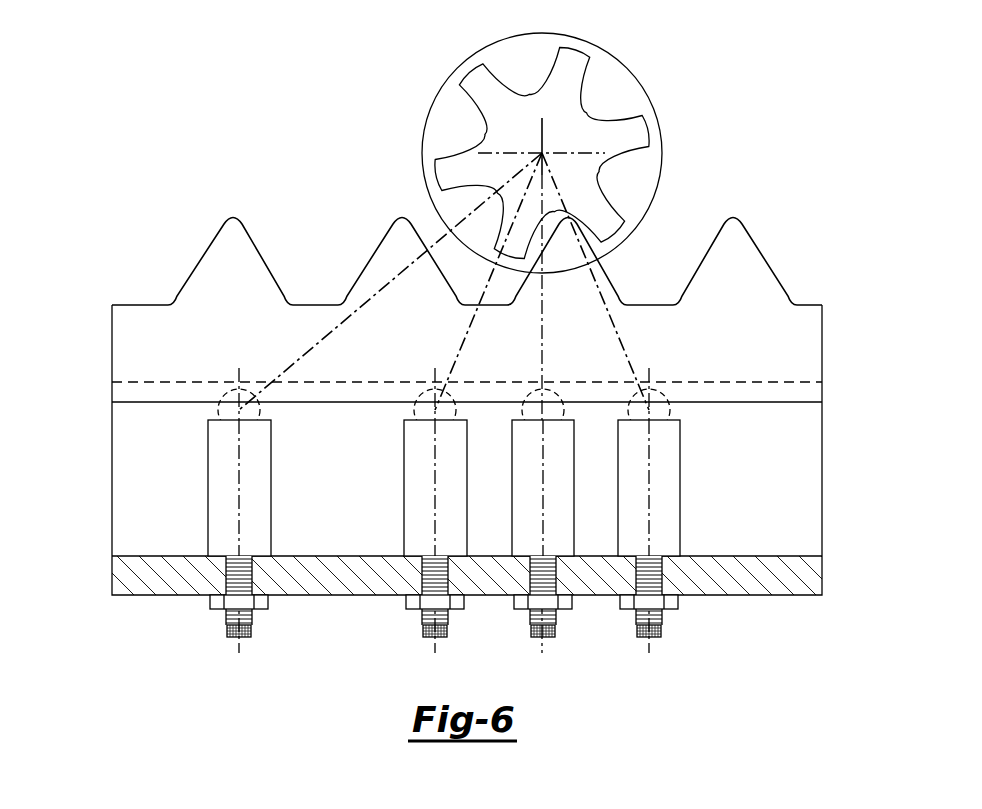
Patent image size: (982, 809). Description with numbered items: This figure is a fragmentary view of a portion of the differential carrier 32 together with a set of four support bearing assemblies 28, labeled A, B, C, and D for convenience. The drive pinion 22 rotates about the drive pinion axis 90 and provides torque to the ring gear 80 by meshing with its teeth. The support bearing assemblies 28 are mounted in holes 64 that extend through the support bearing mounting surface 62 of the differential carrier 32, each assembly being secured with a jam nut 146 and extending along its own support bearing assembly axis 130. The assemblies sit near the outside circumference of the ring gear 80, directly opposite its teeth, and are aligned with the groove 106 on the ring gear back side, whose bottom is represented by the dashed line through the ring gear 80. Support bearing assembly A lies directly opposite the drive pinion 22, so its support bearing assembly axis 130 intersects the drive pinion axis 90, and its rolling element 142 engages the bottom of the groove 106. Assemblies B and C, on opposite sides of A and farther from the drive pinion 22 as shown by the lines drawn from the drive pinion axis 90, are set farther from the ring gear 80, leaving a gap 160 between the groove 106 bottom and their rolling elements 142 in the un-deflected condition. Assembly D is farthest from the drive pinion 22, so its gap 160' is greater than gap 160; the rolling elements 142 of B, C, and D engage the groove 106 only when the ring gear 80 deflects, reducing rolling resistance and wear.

The drive pinion 22 is at (653, 100).
The drive pinion axis 90 is at (542, 153).
The ring gear 80 is at (383, 230).
The gap 160' is at (345, 281).
The gap 160 is at (508, 403).
The groove 106 is at (752, 382).
The rolling element 142 is at (416, 408).
The support bearing assembly 28 is at (271, 480).
The hole 64 is at (252, 565).
The jam nut 146 is at (268, 600).
The support bearing assembly axis 130 is at (240, 645).
The differential carrier 32 is at (471, 481).
The support bearing mounting surface 62 is at (762, 597).